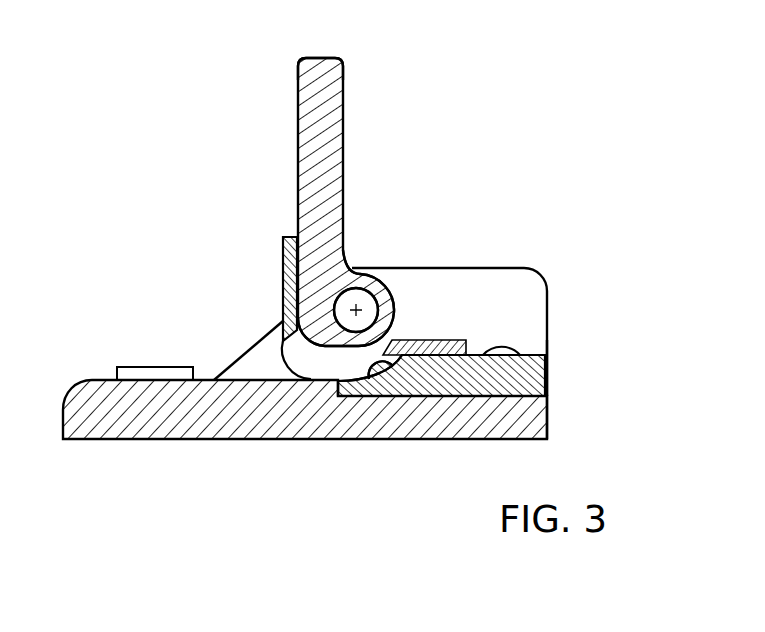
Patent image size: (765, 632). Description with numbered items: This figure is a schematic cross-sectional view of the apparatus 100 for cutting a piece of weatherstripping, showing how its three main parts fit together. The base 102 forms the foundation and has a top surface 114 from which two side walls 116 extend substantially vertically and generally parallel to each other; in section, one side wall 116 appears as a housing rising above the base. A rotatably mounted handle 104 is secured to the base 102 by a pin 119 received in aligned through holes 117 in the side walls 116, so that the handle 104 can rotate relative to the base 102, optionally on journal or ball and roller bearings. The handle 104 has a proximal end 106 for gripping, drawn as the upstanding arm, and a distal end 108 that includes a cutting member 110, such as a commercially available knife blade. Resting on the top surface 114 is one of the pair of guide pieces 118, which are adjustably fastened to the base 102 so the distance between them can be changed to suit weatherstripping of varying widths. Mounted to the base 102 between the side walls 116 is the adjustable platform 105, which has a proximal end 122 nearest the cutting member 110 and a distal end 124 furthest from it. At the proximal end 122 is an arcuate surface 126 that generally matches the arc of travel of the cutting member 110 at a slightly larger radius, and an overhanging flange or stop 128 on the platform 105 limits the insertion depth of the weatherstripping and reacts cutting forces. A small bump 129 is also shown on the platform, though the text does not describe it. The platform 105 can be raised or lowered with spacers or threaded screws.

The apparatus 100 is at (379, 524).
The base 102 is at (92, 380).
The rotatably mounted handle 104 is at (343, 97).
The adjustable platform 105 is at (517, 380).
The proximal end 106 is at (323, 58).
The distal end 108 is at (327, 347).
The cutting member 110 is at (284, 360).
The top surface 114 is at (250, 380).
The side walls 116 is at (402, 267).
The through holes 117 is at (343, 272).
The guide pieces 118 is at (160, 366).
The pin 119 is at (357, 306).
The proximal end 122 is at (341, 383).
The distal end 124 is at (548, 363).
The arcuate surface 126 is at (400, 358).
The overhanging flange or stop 128 is at (443, 340).
The bump 129 is at (478, 352).